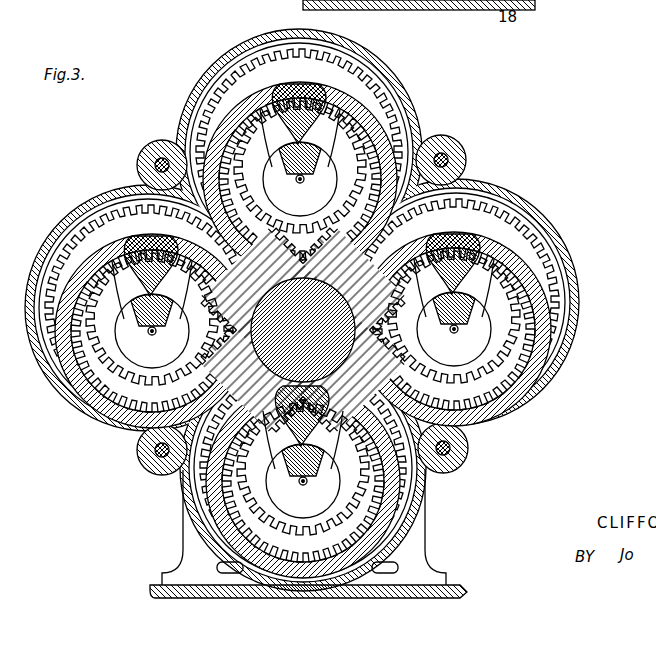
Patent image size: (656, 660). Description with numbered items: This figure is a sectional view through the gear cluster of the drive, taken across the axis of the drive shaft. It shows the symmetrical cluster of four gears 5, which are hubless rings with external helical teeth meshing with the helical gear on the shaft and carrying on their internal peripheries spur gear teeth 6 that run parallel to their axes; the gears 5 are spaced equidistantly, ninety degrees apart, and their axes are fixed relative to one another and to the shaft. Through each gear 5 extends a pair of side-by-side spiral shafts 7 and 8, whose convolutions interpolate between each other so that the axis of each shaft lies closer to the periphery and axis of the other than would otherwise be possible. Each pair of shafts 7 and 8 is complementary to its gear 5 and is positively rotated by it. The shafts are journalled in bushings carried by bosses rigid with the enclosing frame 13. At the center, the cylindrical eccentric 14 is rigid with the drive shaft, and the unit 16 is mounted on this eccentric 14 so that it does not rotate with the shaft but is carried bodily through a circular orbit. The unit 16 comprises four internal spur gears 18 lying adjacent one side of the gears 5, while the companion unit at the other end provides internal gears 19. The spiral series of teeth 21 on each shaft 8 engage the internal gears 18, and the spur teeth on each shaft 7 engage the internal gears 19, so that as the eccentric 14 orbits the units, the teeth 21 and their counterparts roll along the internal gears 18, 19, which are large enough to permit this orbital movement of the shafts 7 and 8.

The gear 5 is at (349, 80).
The spur gear teeth 6 is at (299, 222).
The spiral shaft 7 is at (300, 183).
The spiral shaft 8 is at (303, 95).
The enclosing frame 13 is at (445, 125).
The cylindrical eccentric 14 is at (296, 290).
The unit 16 is at (350, 262).
The internal spur gear 18 is at (352, 112).
The internal gear 19 is at (283, 45).
The spiral series of teeth 21 is at (324, 152).